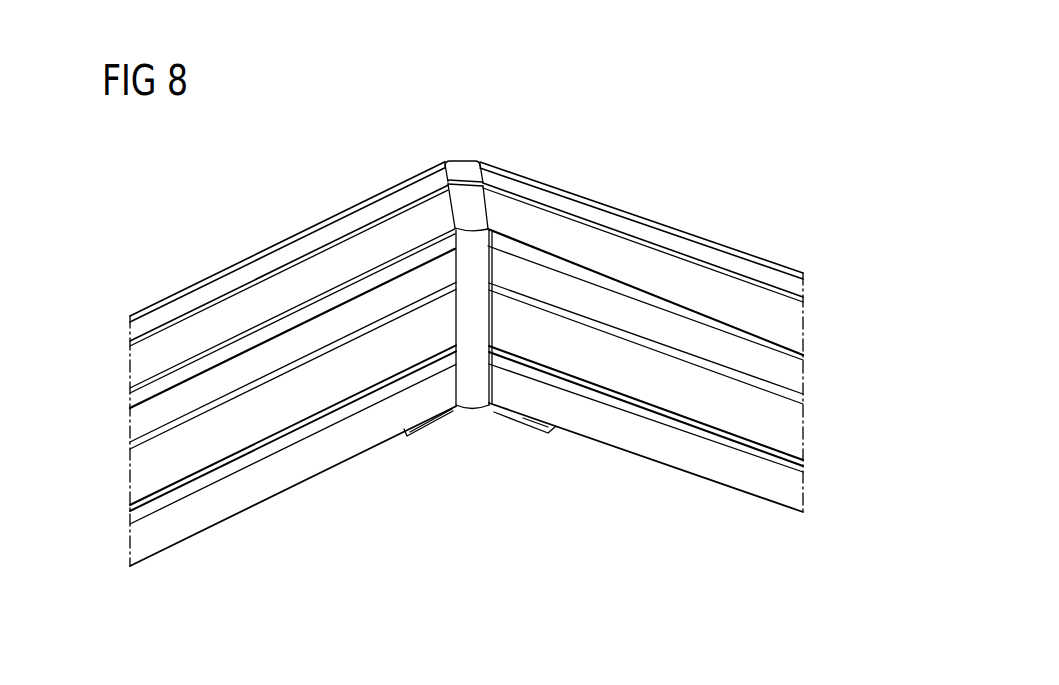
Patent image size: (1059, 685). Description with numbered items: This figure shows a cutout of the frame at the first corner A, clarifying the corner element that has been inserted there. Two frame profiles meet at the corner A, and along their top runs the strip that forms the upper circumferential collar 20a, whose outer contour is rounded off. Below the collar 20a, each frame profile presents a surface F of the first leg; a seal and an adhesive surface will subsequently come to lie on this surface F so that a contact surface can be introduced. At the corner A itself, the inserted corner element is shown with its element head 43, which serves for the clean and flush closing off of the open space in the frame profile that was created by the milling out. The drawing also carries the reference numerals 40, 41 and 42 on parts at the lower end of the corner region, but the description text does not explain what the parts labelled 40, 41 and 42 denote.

The upper circumferential collar 20a is at (343, 212).
The first corner A is at (449, 158).
The element head 43 is at (470, 193).
The corner post 40 is at (473, 402).
The right fastening clip 41 is at (527, 430).
The left fastening clip 42 is at (421, 436).
The surface F is at (260, 303).